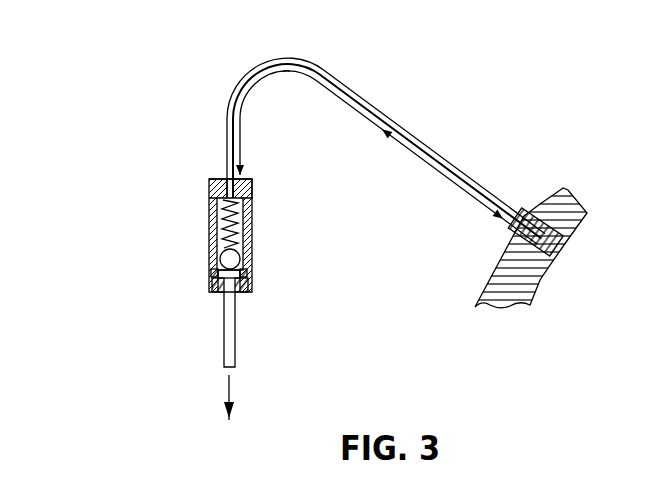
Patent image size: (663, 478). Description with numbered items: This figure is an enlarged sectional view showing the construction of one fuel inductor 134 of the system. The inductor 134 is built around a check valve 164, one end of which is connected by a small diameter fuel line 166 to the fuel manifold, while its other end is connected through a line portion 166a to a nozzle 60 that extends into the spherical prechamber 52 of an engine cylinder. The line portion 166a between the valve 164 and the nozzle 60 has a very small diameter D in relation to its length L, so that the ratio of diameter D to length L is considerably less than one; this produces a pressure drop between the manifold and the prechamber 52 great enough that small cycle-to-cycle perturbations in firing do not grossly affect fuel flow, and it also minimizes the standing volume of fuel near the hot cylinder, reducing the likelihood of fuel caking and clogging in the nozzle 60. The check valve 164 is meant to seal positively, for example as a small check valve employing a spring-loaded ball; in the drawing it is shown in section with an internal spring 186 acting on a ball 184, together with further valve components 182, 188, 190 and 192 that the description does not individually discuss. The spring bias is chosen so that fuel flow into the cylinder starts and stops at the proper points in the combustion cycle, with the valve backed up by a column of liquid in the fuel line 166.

The inductor 134 is at (108, 77).
The line portion 166a is at (273, 62).
The length L is at (386, 157).
The diameter D is at (393, 118).
The check valve 164 is at (209, 181).
The valve body 182 is at (209, 219).
The spring 186 is at (240, 222).
The ball 184 is at (222, 254).
The valve seat 190 is at (247, 279).
The seal member 188 is at (212, 282).
The seal member 192 is at (246, 291).
The fuel line 166 is at (232, 334).
The prechamber 52 is at (517, 278).
The nozzle 60 is at (532, 209).